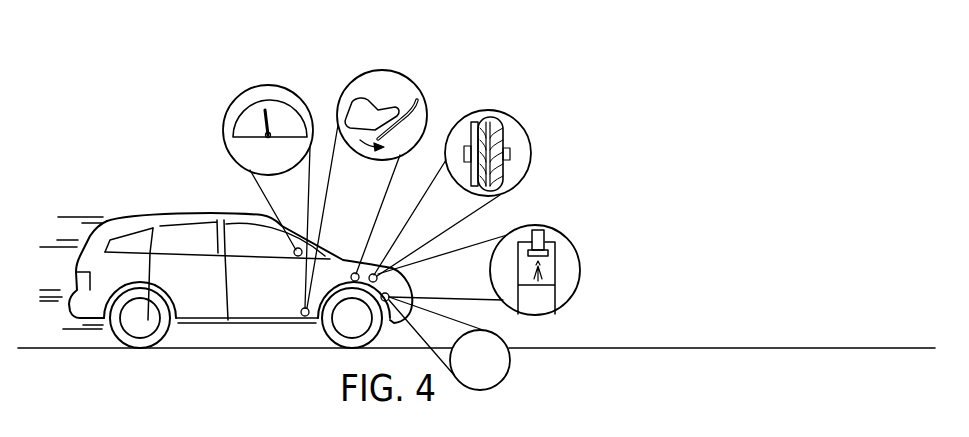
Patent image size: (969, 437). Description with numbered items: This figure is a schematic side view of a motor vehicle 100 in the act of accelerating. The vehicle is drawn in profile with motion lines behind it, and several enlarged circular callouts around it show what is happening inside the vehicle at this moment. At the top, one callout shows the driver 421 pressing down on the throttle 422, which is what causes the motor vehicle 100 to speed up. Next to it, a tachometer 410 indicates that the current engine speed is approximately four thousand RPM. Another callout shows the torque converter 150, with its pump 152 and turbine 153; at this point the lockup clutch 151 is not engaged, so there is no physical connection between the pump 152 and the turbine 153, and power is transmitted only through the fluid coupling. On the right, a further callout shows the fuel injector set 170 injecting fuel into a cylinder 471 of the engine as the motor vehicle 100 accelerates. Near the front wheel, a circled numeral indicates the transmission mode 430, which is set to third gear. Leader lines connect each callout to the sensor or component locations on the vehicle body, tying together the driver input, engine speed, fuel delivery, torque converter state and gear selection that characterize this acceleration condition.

The motor vehicle 100 is at (132, 206).
The tachometer 410 is at (223, 130).
The driver 421 is at (373, 110).
The throttle 422 is at (413, 97).
The torque converter 150 is at (475, 156).
The turbine 153 is at (487, 121).
The pump 152 is at (503, 124).
The lockup clutch 151 is at (473, 173).
The fuel injector set 170 is at (538, 232).
The cylinder 471 is at (518, 247).
The transmission mode 430 is at (510, 368).